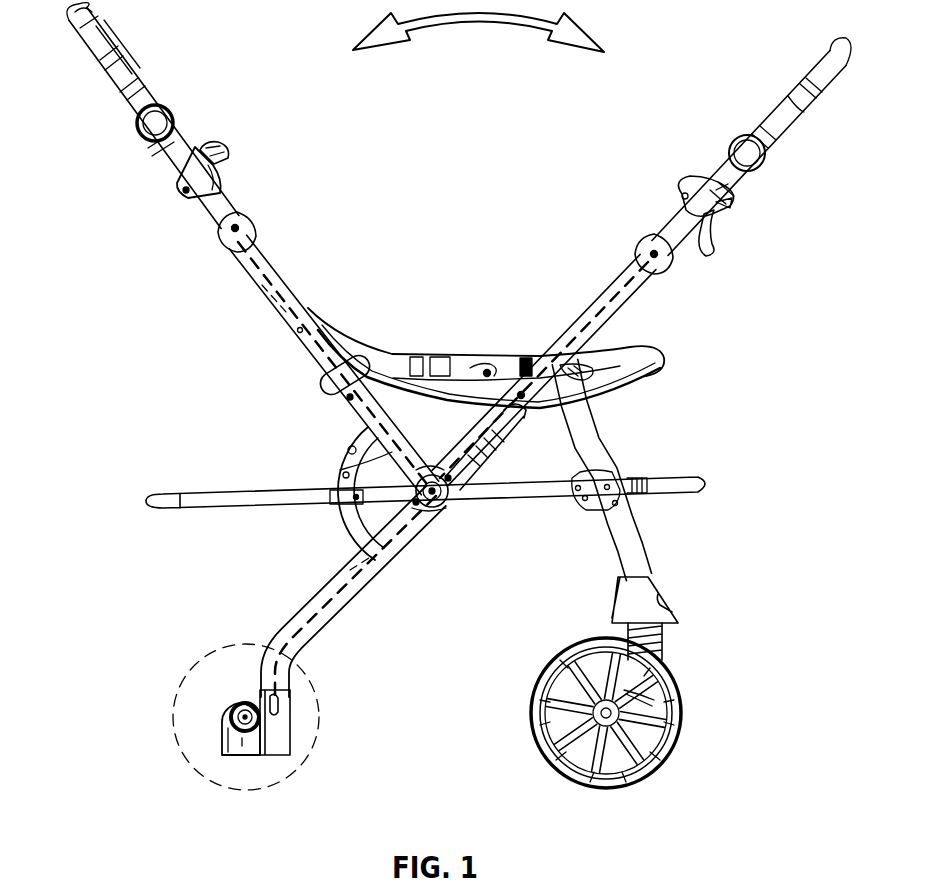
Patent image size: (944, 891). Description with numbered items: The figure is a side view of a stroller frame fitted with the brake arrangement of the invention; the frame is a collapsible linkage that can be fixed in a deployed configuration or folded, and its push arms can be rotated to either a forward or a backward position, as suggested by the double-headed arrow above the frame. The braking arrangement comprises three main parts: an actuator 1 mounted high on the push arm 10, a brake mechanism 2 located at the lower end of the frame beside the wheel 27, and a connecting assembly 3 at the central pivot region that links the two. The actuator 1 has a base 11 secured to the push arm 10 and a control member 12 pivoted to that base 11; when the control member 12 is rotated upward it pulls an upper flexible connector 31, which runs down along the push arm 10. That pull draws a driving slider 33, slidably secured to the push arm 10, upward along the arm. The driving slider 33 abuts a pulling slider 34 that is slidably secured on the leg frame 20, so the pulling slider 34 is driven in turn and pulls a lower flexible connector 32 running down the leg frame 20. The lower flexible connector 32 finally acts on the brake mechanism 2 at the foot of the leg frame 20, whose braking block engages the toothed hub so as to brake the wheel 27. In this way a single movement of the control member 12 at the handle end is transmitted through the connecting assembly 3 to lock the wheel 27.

The actuator 1 is at (165, 188).
The brake mechanism 2 is at (216, 714).
The connecting assembly 3 is at (428, 462).
The push arm 10 is at (262, 288).
The base 11 is at (223, 190).
The control member 12 is at (226, 148).
The leg frame 20 is at (380, 583).
The wheel 27 is at (318, 694).
The upper flexible connector 31 is at (268, 275).
The lower flexible connector 32 is at (348, 575).
The driving slider 33 is at (350, 475).
The pulling slider 34 is at (462, 488).